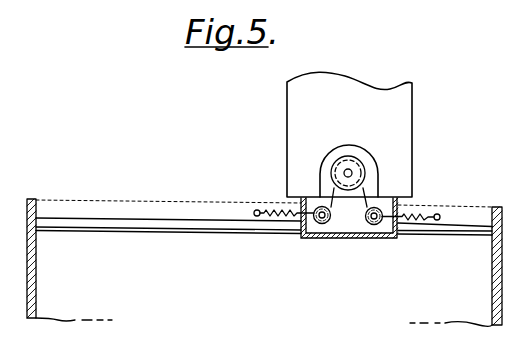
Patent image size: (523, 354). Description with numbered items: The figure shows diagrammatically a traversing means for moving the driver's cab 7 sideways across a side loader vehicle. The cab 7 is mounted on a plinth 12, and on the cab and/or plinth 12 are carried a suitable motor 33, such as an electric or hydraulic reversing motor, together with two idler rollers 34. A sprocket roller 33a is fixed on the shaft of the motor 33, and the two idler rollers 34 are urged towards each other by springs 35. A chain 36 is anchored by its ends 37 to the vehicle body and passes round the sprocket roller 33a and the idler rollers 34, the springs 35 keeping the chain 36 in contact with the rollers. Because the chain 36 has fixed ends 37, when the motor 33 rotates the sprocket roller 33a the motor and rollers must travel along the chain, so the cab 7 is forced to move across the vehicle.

The driver's cab 7 is at (397, 143).
The plinth 12 is at (398, 237).
The motor 33 is at (342, 150).
The sprocket roller 33a is at (342, 170).
The idler rollers 34 is at (320, 228).
The springs 35 is at (278, 205).
The chain 36 is at (92, 220).
The chain ends 37 is at (37, 213).